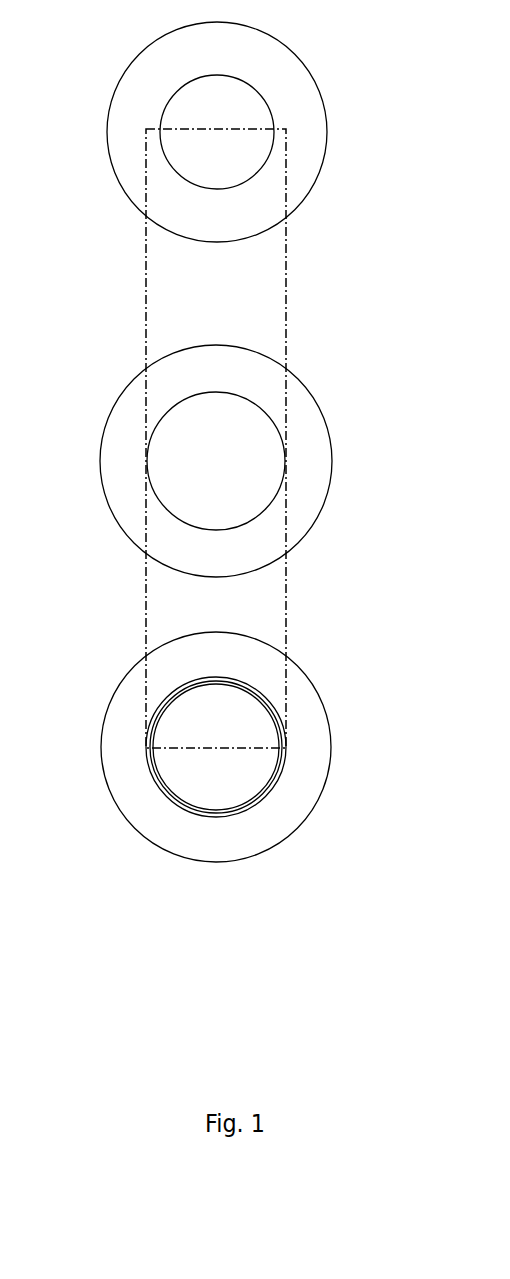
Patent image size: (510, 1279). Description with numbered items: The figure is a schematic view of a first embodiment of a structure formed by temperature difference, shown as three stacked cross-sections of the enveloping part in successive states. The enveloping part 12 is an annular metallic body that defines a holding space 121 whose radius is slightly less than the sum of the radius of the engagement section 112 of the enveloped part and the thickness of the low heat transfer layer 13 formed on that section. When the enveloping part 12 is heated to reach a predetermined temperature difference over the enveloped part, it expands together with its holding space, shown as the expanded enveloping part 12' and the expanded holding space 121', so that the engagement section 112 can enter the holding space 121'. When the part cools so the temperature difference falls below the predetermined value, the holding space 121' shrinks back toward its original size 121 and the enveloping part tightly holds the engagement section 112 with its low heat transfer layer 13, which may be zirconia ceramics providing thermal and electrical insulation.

The enveloping part 12 is at (256, 132).
The holding space 121 is at (155, 126).
The expanded enveloping part 12' is at (260, 603).
The expanded holding space 121' is at (151, 461).
The engagement section 112 is at (172, 763).
The low heat transfer layer 13 is at (173, 802).